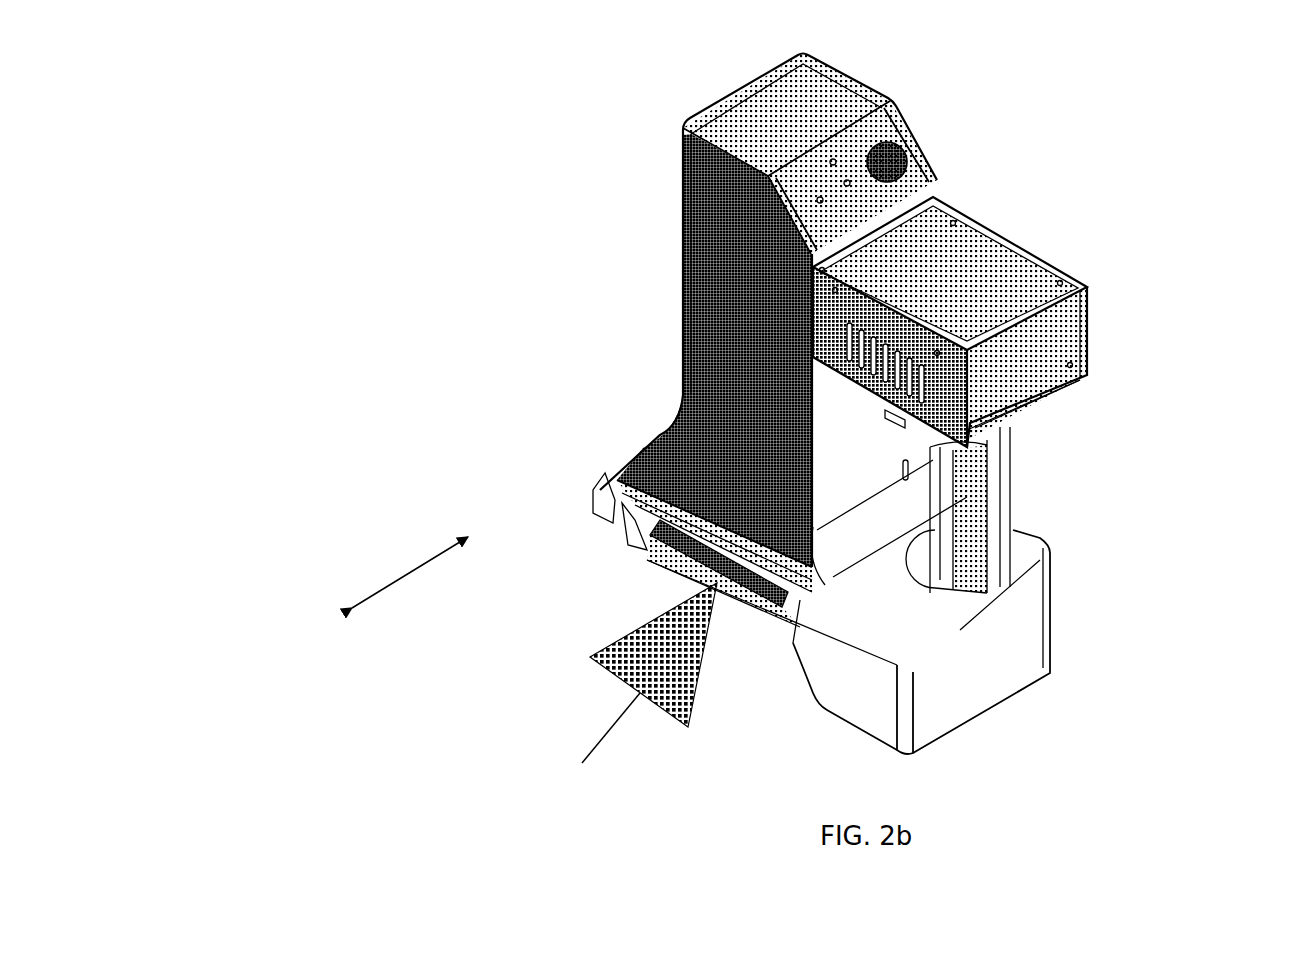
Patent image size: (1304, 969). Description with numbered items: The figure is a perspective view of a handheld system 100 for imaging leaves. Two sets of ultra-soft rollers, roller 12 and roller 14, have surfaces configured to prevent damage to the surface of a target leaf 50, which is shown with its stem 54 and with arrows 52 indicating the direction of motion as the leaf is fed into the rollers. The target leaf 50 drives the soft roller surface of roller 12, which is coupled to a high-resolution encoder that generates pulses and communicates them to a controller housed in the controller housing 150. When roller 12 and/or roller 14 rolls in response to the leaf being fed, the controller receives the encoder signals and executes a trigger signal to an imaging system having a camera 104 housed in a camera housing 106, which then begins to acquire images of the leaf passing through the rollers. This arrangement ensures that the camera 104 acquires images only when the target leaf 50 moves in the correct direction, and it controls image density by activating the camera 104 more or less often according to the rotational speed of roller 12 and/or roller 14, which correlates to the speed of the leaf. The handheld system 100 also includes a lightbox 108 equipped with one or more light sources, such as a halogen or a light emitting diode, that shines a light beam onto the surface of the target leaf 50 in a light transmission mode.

The handheld system 100 is at (258, 146).
The camera 104 is at (745, 195).
The camera housing 106 is at (713, 240).
The roller 12 is at (667, 528).
The roller 14 is at (662, 548).
The controller housing 150 is at (1098, 310).
The lightbox 108 is at (1063, 596).
The target leaf 50 is at (653, 637).
The arrows 52 is at (403, 578).
The stem 54 is at (637, 695).